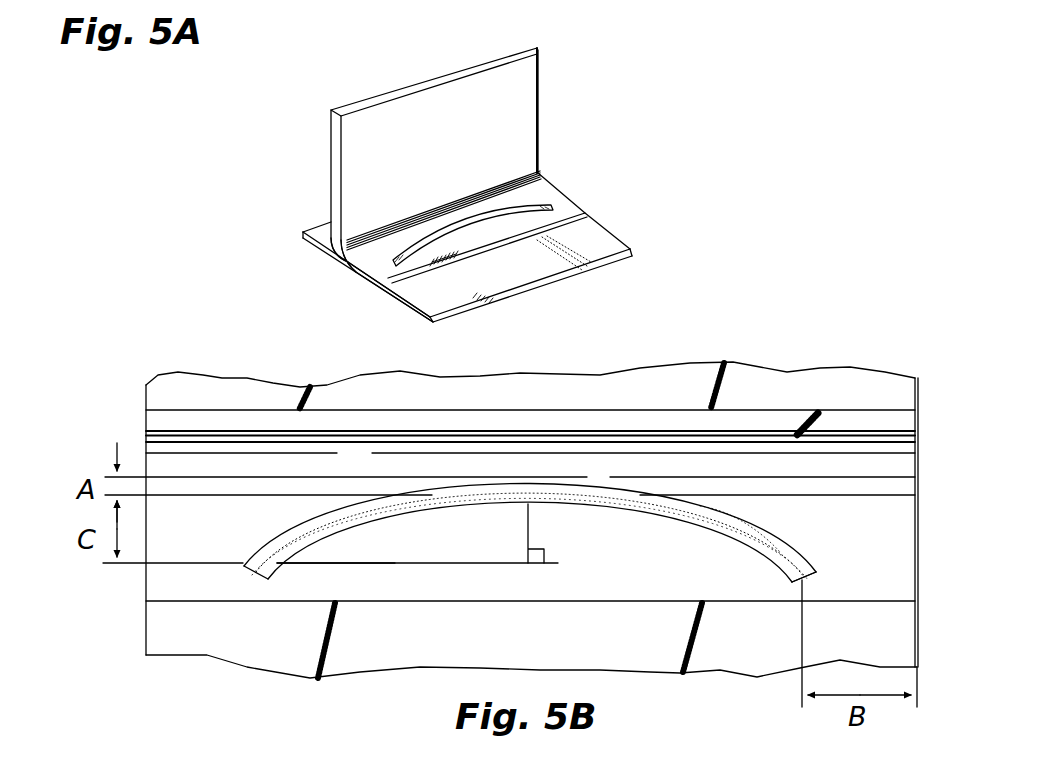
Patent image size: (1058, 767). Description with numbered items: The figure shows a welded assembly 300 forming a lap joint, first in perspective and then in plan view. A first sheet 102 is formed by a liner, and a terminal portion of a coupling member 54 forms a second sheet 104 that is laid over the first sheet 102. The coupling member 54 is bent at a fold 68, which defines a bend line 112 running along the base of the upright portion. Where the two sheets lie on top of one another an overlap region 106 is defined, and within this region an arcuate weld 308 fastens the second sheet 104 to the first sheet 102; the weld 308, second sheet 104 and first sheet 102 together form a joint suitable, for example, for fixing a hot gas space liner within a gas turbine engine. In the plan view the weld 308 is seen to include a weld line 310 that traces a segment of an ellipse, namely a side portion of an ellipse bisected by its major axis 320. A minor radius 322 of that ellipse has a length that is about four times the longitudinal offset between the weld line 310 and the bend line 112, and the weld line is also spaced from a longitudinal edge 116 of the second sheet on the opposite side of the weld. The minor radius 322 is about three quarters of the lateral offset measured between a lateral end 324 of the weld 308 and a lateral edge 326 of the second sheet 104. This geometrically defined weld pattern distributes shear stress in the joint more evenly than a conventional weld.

In FIG. 5A, the coupling member 54 is at (365, 126).
In FIG. 5A, the fold 68 is at (548, 168).
In FIG. 5A, the first sheet 102 is at (598, 243).
In FIG. 5A, the second sheet 104 is at (570, 204).
In FIG. 5A, the overlap region 106 is at (333, 273).
In FIG. 5A, the bend line 112 is at (384, 226).
In FIG. 5B, the bend line 112 is at (180, 476).
In FIG. 5A, the longitudinal edge 116 is at (467, 257).
In FIG. 5A, the welded assembly 300 is at (631, 77).
In FIG. 5B, the welded assembly 300 is at (212, 346).
In FIG. 5A, the arcuate weld 308 is at (484, 197).
In FIG. 5B, the arcuate weld 308 is at (644, 519).
In FIG. 5B, the weld line 310 is at (754, 533).
In FIG. 5B, the major axis 320 is at (393, 563).
In FIG. 5B, the minor radius 322 is at (529, 531).
In FIG. 5B, the lateral end 324 is at (770, 584).
In FIG. 5B, the lateral edge 326 is at (146, 588).